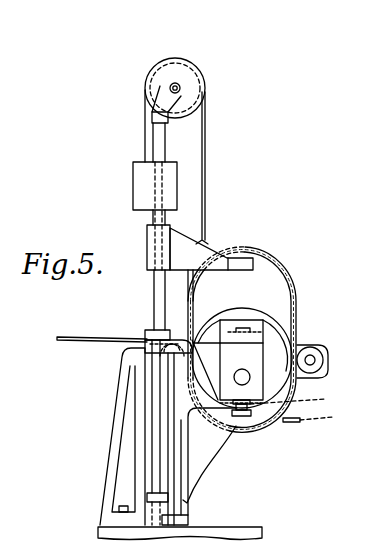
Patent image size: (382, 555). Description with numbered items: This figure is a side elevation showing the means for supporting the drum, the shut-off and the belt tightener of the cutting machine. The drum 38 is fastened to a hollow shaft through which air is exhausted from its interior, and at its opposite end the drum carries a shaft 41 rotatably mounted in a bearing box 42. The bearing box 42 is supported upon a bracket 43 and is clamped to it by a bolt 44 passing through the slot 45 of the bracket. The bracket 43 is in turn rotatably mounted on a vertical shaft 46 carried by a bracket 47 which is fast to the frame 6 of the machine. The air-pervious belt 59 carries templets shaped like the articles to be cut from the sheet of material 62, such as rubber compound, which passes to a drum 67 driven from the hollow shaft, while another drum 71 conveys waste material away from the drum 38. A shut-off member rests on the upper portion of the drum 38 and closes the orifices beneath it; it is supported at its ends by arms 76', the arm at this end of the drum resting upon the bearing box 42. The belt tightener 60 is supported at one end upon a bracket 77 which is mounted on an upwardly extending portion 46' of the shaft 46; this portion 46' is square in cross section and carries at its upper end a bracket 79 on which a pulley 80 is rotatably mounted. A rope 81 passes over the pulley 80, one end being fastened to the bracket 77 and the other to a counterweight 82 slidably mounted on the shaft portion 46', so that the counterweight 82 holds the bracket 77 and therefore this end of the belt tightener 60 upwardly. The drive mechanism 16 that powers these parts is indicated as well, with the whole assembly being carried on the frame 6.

The frame 6 is at (230, 531).
The drive mechanism 16 is at (276, 352).
The drum 38 is at (284, 347).
The shaft 41 is at (243, 378).
The bearing box 42 is at (256, 362).
The bracket 43 is at (218, 445).
The bolt 44 is at (300, 401).
The slot 45 is at (320, 421).
The vertical shaft 46 is at (119, 432).
The upwardly extending shaft portion 46' is at (137, 300).
The bracket 47 is at (115, 410).
The belt 59 is at (278, 327).
The belt tightener 60 is at (276, 256).
The sheet of material 62 is at (68, 339).
The drum 67 is at (148, 377).
The drum 71 is at (321, 360).
The arm 76' is at (259, 313).
The bracket 77 is at (208, 252).
The bracket 79 is at (160, 100).
The pulley 80 is at (189, 75).
The rope 81 is at (204, 140).
The counterweight 82 is at (138, 193).